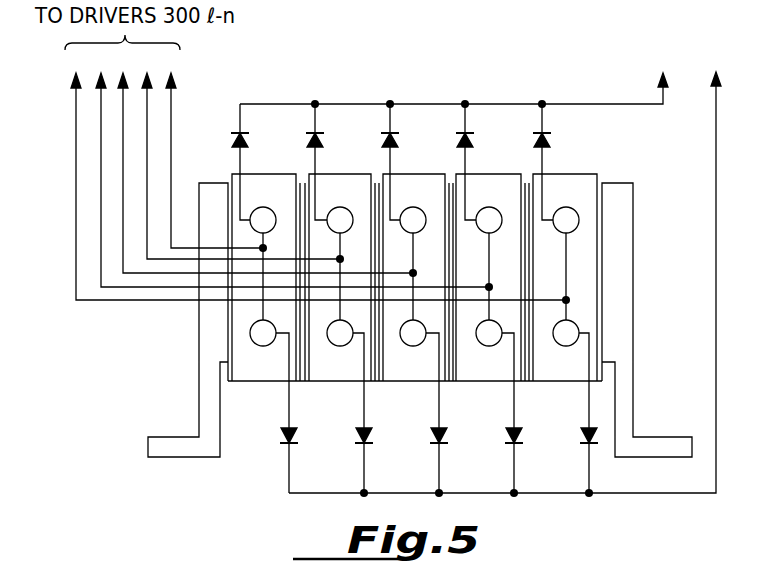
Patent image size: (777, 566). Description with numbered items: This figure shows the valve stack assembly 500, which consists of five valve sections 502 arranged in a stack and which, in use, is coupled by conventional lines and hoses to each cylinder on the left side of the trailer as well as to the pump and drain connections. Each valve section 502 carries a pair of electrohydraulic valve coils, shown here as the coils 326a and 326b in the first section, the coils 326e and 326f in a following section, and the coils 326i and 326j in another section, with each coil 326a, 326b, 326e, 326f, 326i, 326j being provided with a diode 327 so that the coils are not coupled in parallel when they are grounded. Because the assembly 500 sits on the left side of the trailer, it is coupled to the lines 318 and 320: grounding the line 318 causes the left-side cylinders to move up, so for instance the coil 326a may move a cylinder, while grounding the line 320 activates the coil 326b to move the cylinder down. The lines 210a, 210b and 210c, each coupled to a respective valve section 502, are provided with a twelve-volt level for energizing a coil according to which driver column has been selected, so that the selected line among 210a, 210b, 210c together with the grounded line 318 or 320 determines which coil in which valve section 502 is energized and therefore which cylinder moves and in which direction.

The line 210a is at (75, 127).
The line 210b is at (102, 80).
The line 210c is at (123, 125).
The line 318 is at (656, 76).
The line 320 is at (719, 74).
The electrohydraulic valve coil 326a is at (265, 212).
The electrohydraulic valve coil 326b is at (252, 330).
The electrohydraulic valve coil 326e is at (340, 212).
The electrohydraulic valve coil 326f is at (343, 345).
The electrohydraulic valve coil 326i is at (415, 212).
The electrohydraulic valve coil 326j is at (415, 345).
The diode 327 is at (236, 140).
The valve stack assembly 500 is at (433, 54).
The valve section 502 is at (265, 383).